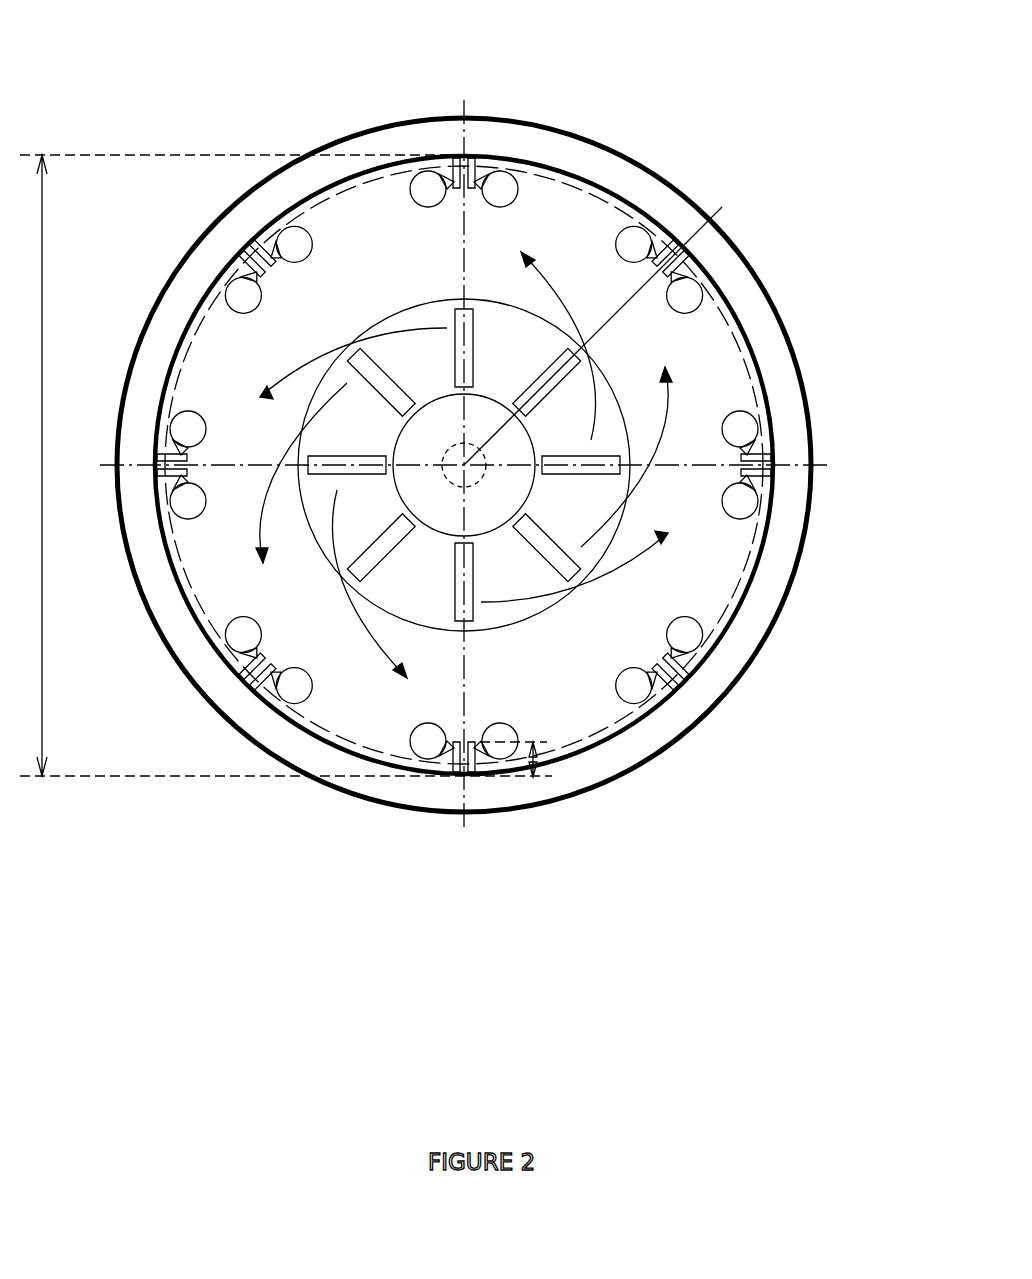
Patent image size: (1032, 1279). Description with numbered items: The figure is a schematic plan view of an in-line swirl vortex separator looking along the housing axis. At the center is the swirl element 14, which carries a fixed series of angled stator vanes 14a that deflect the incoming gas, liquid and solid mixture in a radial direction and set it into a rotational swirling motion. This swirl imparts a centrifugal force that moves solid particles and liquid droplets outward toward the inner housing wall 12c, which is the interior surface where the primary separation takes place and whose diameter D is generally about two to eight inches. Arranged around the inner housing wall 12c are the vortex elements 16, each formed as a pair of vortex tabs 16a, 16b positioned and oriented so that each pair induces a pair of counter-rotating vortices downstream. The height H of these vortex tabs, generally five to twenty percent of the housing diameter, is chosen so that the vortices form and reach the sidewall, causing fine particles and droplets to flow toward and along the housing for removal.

The inner housing wall 12c is at (758, 353).
The swirl element 14 is at (413, 353).
The stator vanes 14a is at (547, 372).
The vortex elements 16 is at (418, 484).
The vortex tab 16a is at (230, 671).
The vortex tab 16b is at (267, 692).
The diameter of the inner housing D is at (285, 465).
The height of vortex vanes H is at (533, 767).